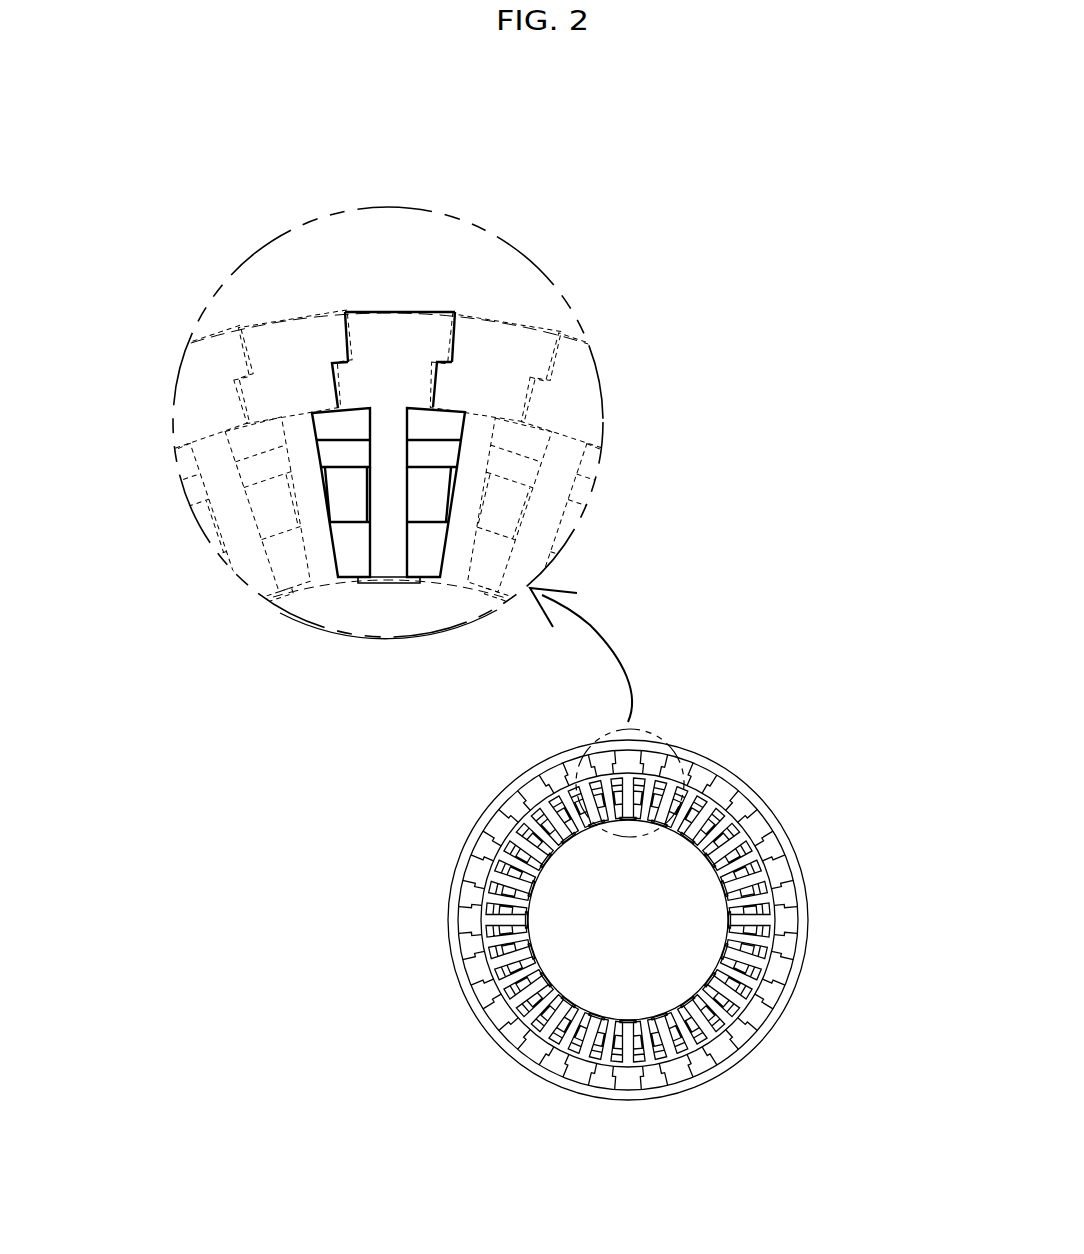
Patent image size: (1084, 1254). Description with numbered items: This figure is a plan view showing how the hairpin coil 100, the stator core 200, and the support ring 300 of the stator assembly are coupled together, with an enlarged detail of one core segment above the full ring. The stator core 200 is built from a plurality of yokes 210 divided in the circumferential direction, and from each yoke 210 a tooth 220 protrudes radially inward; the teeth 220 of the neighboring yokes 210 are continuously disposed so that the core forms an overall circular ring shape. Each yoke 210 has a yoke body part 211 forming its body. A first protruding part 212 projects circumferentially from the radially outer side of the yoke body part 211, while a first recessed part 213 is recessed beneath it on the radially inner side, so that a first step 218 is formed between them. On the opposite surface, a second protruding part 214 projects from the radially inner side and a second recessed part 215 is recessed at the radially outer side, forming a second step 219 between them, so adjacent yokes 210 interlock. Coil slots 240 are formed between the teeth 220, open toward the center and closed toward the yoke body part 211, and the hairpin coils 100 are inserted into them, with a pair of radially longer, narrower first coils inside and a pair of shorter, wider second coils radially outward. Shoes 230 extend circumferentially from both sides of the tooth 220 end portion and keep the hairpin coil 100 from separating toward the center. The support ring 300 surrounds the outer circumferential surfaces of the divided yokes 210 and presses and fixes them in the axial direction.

The hairpin coil 100 is at (720, 813).
The stator core 200 is at (777, 855).
The yoke 210 is at (555, 153).
The yoke body part 211 is at (397, 350).
The first protruding part 212 is at (453, 320).
The first recessed part 213 is at (437, 384).
The second protruding part 214 is at (337, 383).
The second recessed part 215 is at (346, 338).
The first step 218 is at (420, 392).
The second step 219 is at (337, 365).
The tooth 220 is at (390, 517).
The shoe 230 is at (357, 582).
The coil slot 240 is at (327, 503).
The support ring 300 is at (553, 300).